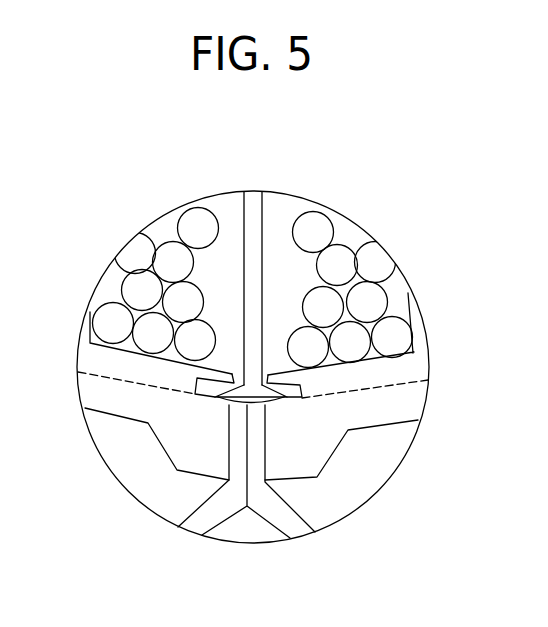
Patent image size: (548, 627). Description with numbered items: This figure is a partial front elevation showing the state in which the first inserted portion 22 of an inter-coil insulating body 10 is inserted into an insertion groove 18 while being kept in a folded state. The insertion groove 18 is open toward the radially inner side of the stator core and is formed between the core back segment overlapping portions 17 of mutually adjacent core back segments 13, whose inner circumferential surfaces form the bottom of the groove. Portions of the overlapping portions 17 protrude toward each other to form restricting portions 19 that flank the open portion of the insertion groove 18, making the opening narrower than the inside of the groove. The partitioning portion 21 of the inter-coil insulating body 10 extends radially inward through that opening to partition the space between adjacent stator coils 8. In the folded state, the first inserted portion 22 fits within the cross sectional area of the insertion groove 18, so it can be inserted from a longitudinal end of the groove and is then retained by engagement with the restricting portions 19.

The stator coil 8 is at (340, 255).
The inter-coil insulating body 10 is at (277, 212).
The core back segment 13 is at (225, 512).
The core back segment overlapping portion 17 is at (135, 363).
The insertion groove 18 is at (300, 398).
The restricting portion 19 is at (228, 376).
The partitioning portion 21 is at (245, 248).
The first inserted portion 22 is at (243, 403).